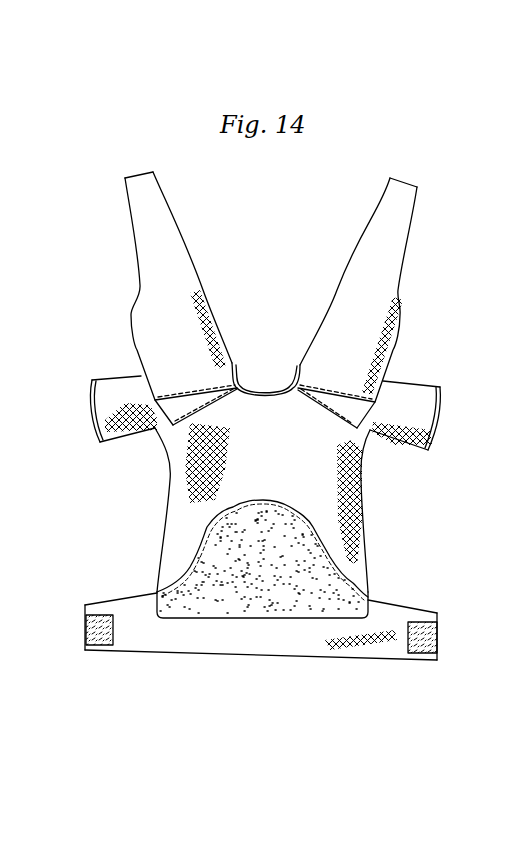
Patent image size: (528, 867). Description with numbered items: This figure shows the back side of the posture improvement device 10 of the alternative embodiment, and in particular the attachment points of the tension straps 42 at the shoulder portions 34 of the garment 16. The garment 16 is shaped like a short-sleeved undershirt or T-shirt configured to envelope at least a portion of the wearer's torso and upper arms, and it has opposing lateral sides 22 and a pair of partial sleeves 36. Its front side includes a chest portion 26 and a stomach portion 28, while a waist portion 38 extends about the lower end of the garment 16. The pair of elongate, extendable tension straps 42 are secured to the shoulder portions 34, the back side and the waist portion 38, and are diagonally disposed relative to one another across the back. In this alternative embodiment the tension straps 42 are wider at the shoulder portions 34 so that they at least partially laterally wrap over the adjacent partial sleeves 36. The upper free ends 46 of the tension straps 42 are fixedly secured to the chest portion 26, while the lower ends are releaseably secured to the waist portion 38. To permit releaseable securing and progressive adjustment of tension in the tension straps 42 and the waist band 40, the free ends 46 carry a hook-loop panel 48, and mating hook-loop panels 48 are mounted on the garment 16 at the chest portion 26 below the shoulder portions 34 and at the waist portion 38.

The posture improvement device 10 is at (182, 152).
The garment 16 is at (92, 418).
The lateral sides 22 is at (361, 506).
The chest portion 26 is at (280, 443).
The stomach portion 28 is at (273, 540).
The shoulder portions 34 is at (138, 377).
The partial sleeves 36 is at (102, 378).
The waist portion 38 is at (197, 618).
The waist band 40 is at (336, 658).
The tension straps 42 is at (141, 246).
The free ends 46 is at (130, 176).
The hook-loop panel 48 is at (86, 650).